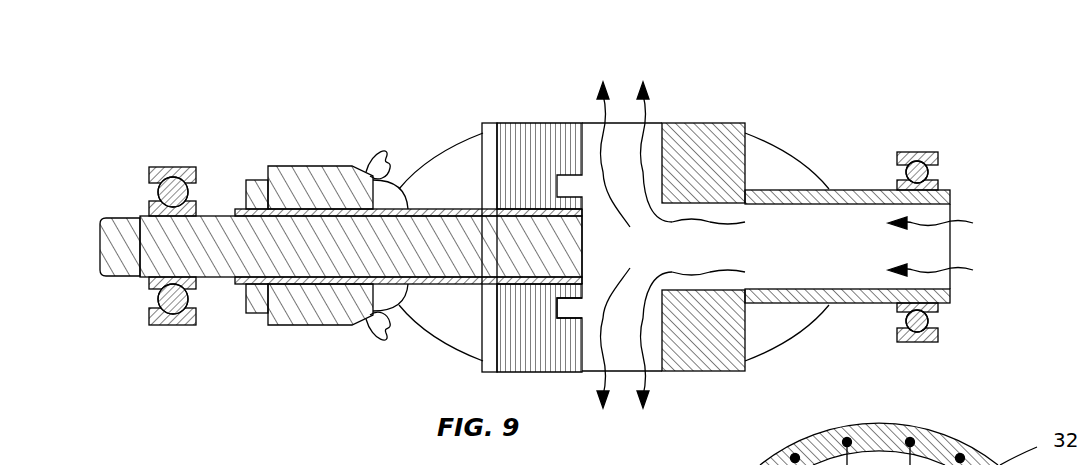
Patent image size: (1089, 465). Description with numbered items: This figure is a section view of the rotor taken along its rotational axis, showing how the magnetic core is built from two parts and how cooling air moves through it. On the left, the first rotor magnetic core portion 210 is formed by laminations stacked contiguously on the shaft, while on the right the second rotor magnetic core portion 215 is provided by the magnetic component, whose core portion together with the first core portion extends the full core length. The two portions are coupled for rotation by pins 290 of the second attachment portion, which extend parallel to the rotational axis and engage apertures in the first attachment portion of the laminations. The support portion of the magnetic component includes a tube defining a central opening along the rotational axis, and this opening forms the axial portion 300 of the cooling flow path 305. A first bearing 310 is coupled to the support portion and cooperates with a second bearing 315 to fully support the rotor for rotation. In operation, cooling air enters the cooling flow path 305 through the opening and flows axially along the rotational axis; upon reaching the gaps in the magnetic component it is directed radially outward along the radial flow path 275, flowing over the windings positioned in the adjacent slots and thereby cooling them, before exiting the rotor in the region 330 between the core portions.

The first rotor magnetic core portion 210 is at (541, 108).
The second rotor magnetic core portion 215 is at (694, 110).
The radial flow path 275 is at (583, 355).
The pins 290 is at (572, 305).
The axial portion 300 is at (913, 290).
The cooling flow path 305 is at (697, 263).
The first bearing 310 is at (928, 152).
The second bearing 315 is at (158, 325).
The air outlet 330 is at (634, 273).